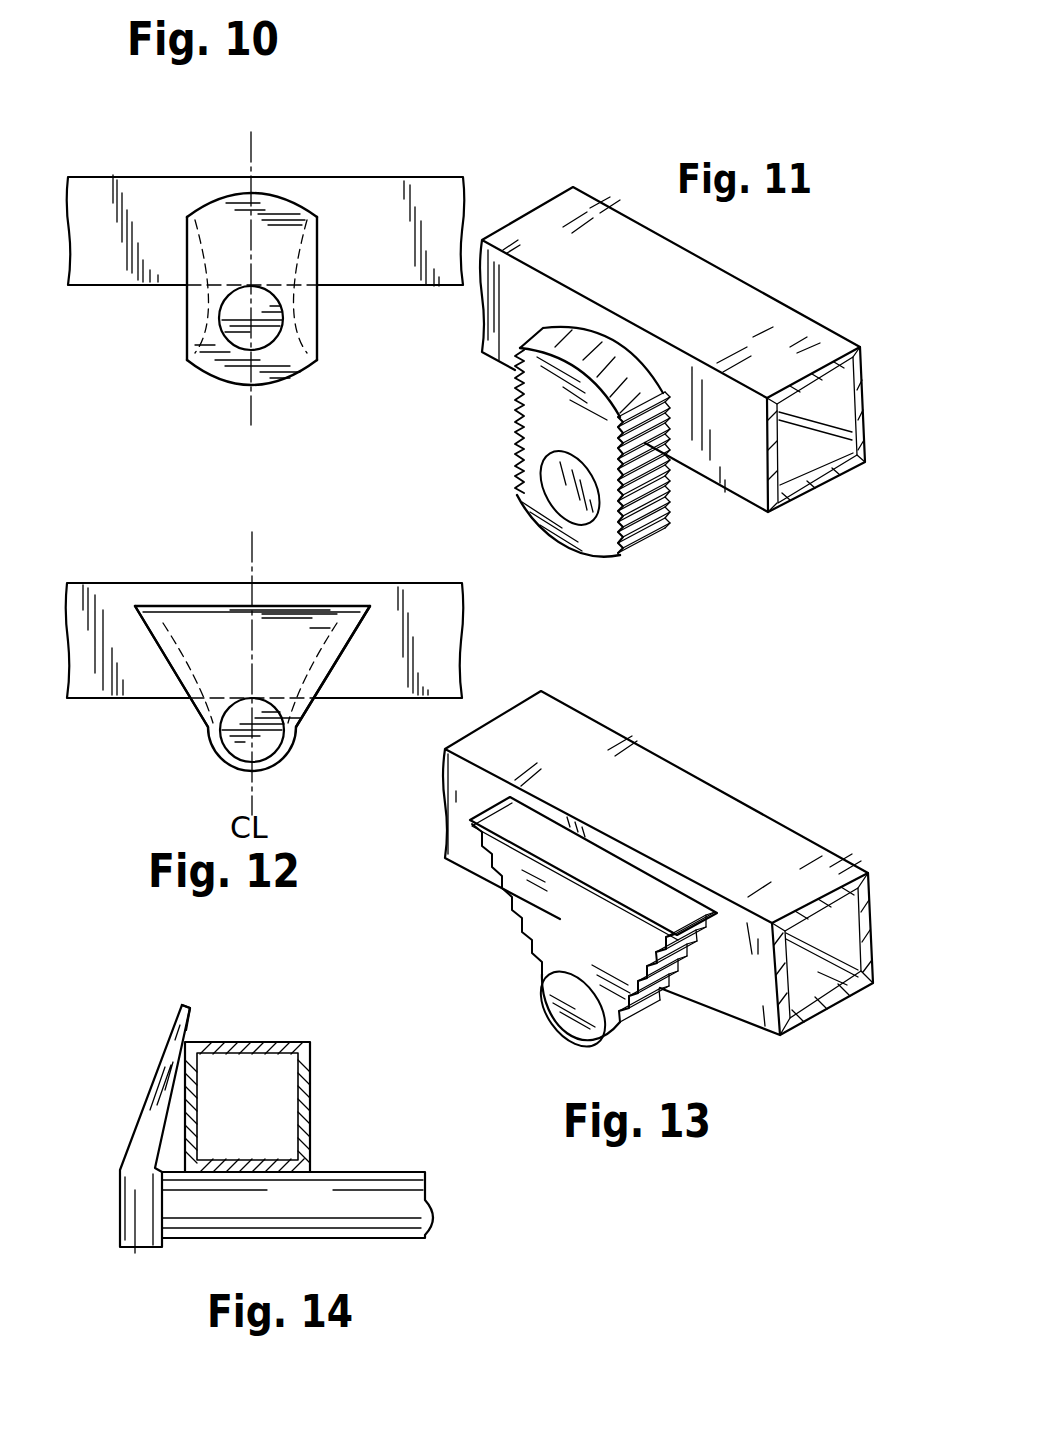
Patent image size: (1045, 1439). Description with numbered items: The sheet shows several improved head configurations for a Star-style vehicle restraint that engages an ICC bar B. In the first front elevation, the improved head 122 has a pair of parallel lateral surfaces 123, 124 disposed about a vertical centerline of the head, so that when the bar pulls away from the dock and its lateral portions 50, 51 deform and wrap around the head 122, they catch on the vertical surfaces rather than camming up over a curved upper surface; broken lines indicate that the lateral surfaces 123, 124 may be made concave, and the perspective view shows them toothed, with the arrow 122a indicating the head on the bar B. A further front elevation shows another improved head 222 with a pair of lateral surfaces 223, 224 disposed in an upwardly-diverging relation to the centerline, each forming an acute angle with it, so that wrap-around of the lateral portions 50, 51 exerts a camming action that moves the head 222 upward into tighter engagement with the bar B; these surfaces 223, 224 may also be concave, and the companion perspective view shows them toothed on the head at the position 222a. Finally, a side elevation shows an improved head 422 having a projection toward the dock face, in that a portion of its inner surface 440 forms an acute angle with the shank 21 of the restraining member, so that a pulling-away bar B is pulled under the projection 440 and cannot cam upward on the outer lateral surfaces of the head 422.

In FIG. 10, the lateral portion of the ICC bar 50 is at (108, 243).
In FIG. 11, the lateral portion of the ICC bar 50 is at (548, 319).
In FIG. 13, the lateral portion of the ICC bar 50 is at (547, 755).
In FIG. 10, the lateral portion of the ICC bar 51 is at (389, 246).
In FIG. 11, the lateral portion of the ICC bar 51 is at (745, 431).
In FIG. 13, the lateral portion of the ICC bar 51 is at (802, 908).
In FIG. 10, the improved head 122 is at (263, 233).
In FIG. 10, the lateral surface 123 is at (317, 334).
In FIG. 11, the lateral surface 123 is at (655, 523).
In FIG. 10, the lateral surface 124 is at (188, 334).
In FIG. 11, the lateral surface 124 is at (517, 439).
In FIG. 11, the protrusion junction 122a is at (652, 355).
In FIG. 11, the ICC bar B is at (690, 319).
In FIG. 14, the ICC bar B is at (254, 1115).
In FIG. 12, the improved head 222 is at (220, 633).
In FIG. 13, the improved head 222 is at (607, 913).
In FIG. 12, the lateral surface 223 is at (302, 727).
In FIG. 13, the lateral surface 223 is at (657, 1007).
In FIG. 12, the lateral surface 224 is at (197, 717).
In FIG. 13, the lateral surface 224 is at (525, 946).
In FIG. 13, the protrusion junction 222a is at (697, 884).
In FIG. 14, the bar 21 is at (332, 1202).
In FIG. 14, the improved head 422 is at (140, 1198).
In FIG. 14, the inner surface of the head portion 440 is at (190, 1030).